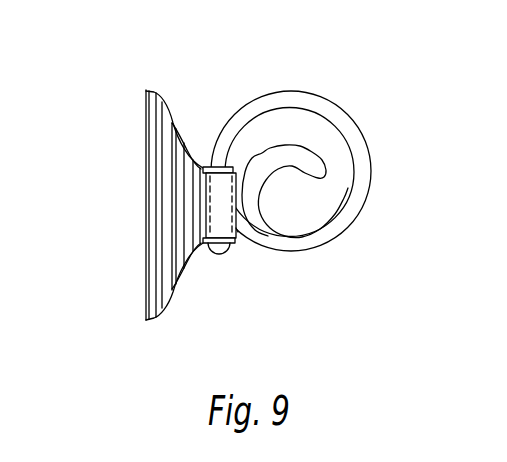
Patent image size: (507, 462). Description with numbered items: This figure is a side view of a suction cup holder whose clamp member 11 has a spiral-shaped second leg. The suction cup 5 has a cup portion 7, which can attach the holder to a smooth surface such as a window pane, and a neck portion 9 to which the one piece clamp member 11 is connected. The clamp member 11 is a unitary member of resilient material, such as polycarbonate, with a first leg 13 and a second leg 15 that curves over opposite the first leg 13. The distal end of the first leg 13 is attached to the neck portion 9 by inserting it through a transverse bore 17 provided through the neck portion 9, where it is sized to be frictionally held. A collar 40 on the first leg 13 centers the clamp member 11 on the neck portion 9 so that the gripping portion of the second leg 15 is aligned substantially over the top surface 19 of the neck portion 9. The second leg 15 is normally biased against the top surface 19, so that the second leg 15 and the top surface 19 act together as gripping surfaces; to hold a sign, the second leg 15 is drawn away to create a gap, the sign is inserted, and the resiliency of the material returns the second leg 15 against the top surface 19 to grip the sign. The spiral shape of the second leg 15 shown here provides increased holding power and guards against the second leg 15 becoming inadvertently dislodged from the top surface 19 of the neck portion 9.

The suction cup 5 is at (155, 210).
The cup portion 7 is at (146, 136).
The neck portion 9 is at (211, 253).
The clamp member 11 is at (326, 109).
The first leg 13 is at (243, 107).
The second leg 15 is at (338, 227).
The transverse bore 17 is at (220, 226).
The top surface 19 is at (237, 230).
The collar 40 is at (179, 126).